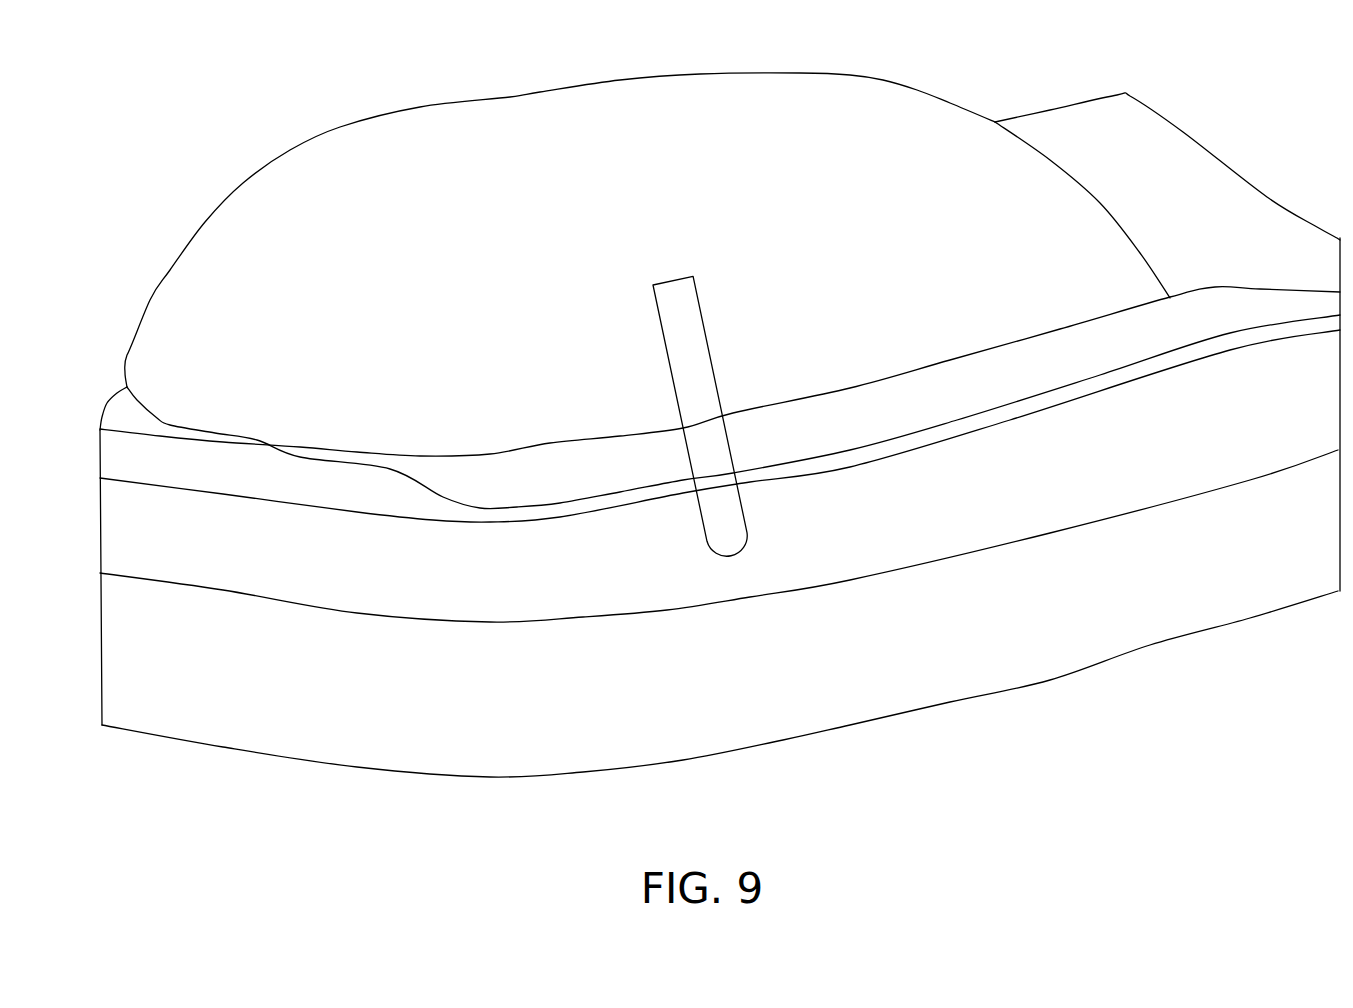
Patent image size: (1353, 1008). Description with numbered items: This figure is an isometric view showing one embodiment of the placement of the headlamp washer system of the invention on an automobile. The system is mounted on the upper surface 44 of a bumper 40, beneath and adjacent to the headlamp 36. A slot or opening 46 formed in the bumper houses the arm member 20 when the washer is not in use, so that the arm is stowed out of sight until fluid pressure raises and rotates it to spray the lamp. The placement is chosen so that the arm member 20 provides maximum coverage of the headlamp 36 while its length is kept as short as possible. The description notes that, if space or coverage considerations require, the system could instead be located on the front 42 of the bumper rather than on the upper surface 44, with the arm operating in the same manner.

The arm member 20 is at (704, 486).
The headlamp 36 is at (540, 107).
The bumper 40 is at (1038, 697).
The front of the bumper 42 is at (1142, 640).
The upper surface 44 is at (895, 557).
The slot or opening 46 is at (827, 530).